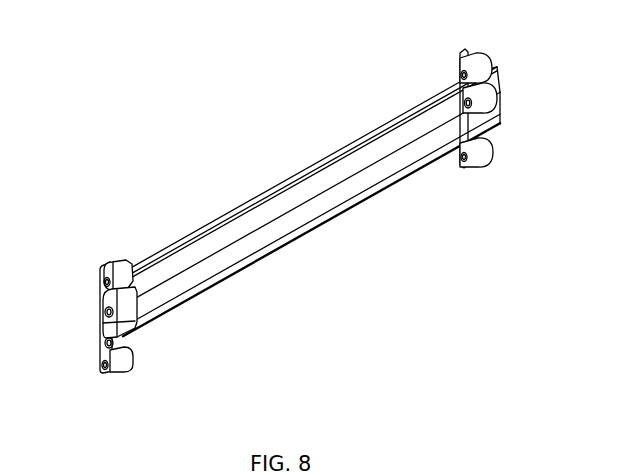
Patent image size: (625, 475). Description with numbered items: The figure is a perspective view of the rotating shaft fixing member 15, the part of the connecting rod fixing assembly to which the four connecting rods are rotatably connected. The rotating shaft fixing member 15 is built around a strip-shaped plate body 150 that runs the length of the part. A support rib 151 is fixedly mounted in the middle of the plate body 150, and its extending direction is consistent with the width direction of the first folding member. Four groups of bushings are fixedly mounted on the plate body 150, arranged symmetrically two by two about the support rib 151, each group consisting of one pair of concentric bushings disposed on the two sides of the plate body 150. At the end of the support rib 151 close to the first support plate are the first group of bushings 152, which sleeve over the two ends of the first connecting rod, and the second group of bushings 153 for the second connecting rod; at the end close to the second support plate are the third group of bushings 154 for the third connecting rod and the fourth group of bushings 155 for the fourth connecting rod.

The rotating shaft fixing member 15 is at (257, 195).
The strip-shaped plate body 150 is at (337, 151).
The support rib 151 is at (157, 308).
The first group of bushings 152 is at (107, 272).
The second group of bushings 153 is at (121, 309).
The third group of bushings 154 is at (114, 348).
The fourth group of bushings 155 is at (120, 369).